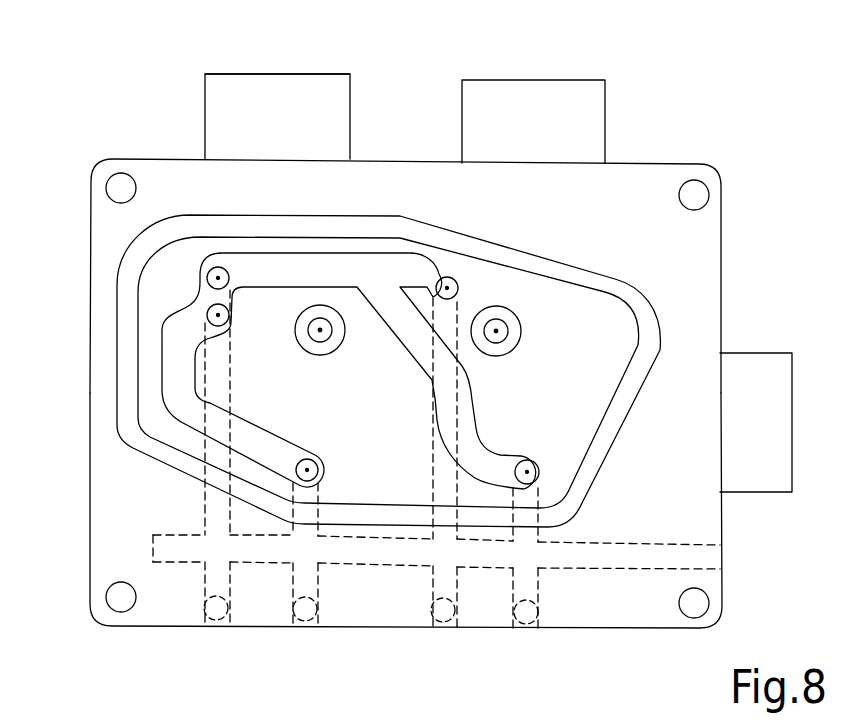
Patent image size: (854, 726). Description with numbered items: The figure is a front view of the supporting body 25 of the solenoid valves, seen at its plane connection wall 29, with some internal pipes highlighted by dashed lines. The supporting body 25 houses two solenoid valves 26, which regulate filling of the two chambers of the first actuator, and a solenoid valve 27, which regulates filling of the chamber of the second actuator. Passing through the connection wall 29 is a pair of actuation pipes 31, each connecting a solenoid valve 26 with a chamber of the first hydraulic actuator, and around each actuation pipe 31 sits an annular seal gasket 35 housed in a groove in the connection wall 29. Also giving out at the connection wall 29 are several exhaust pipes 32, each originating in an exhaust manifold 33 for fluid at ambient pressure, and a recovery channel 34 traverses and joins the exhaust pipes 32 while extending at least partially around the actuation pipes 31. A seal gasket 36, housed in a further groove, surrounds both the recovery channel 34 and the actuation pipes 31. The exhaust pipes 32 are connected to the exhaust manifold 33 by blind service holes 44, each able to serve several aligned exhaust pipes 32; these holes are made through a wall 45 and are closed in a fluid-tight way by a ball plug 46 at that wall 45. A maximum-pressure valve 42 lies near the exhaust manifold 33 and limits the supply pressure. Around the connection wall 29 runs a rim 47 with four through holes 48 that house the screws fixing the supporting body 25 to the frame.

The supporting body 25 is at (414, 354).
The solenoid valve 26 is at (218, 112).
The solenoid valve 27 is at (353, 64).
The connection wall 29 is at (160, 173).
The actuation pipe 31 is at (320, 332).
The exhaust pipe 32 is at (218, 315).
The exhaust manifold 33 is at (607, 545).
The recovery channel 34 is at (258, 443).
The annular seal gasket 35 is at (340, 339).
The seal gasket 36 is at (600, 447).
The maximum-pressure valve 42 is at (764, 367).
The blind service hole 44 is at (215, 378).
The wall 45 is at (374, 643).
The ball plug 46 is at (214, 612).
The rim 47 is at (702, 515).
The through hole 48 is at (694, 195).